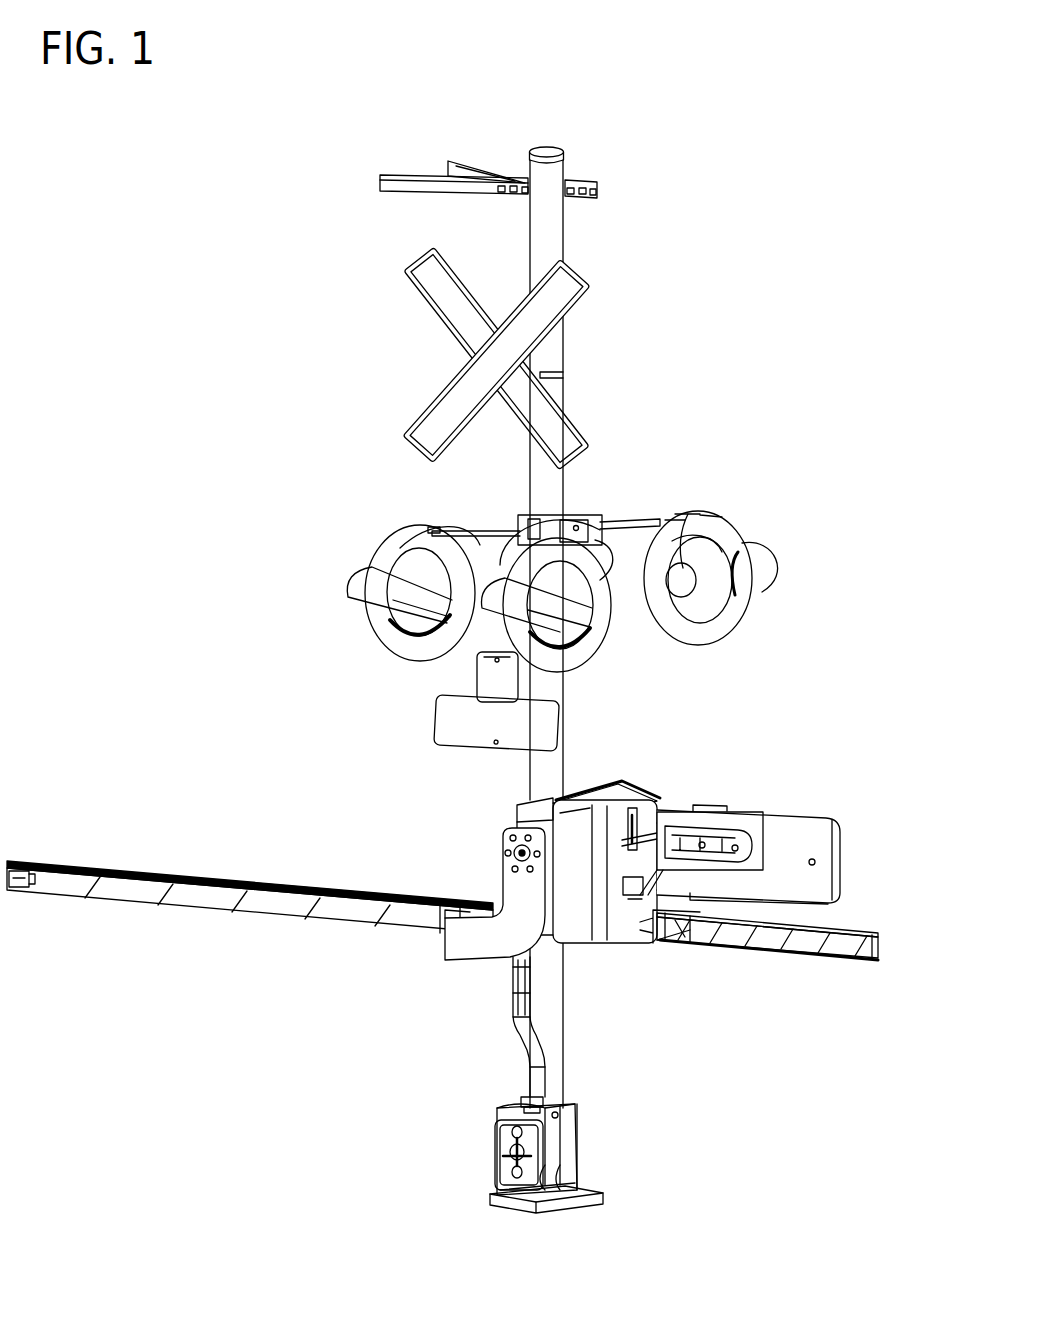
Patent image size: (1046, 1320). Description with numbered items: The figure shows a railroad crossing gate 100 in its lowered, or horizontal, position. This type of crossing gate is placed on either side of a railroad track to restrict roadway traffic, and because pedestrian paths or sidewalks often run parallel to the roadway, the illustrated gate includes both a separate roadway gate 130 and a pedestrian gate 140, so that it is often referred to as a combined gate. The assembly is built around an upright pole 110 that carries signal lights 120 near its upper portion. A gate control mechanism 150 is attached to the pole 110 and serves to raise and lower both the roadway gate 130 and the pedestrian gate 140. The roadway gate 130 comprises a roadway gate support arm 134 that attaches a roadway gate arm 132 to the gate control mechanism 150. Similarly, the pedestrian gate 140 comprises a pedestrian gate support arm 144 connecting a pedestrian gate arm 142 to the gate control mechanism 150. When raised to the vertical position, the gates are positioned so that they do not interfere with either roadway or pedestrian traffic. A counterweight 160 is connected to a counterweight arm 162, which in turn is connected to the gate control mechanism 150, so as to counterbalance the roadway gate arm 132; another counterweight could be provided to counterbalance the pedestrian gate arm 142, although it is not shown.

The railroad crossing gate 100 is at (200, 200).
The pole 110 is at (566, 154).
The signal lights 120 is at (380, 549).
The roadway gate 130 is at (300, 968).
The roadway gate arm 132 is at (150, 896).
The roadway gate support arm 134 is at (481, 947).
The pedestrian gate 140 is at (740, 988).
The pedestrian gate arm 142 is at (870, 960).
The pedestrian gate support arm 144 is at (668, 943).
The gate control mechanism 150 is at (604, 786).
The counterweight 160 is at (843, 870).
The counterweight arm 162 is at (731, 812).